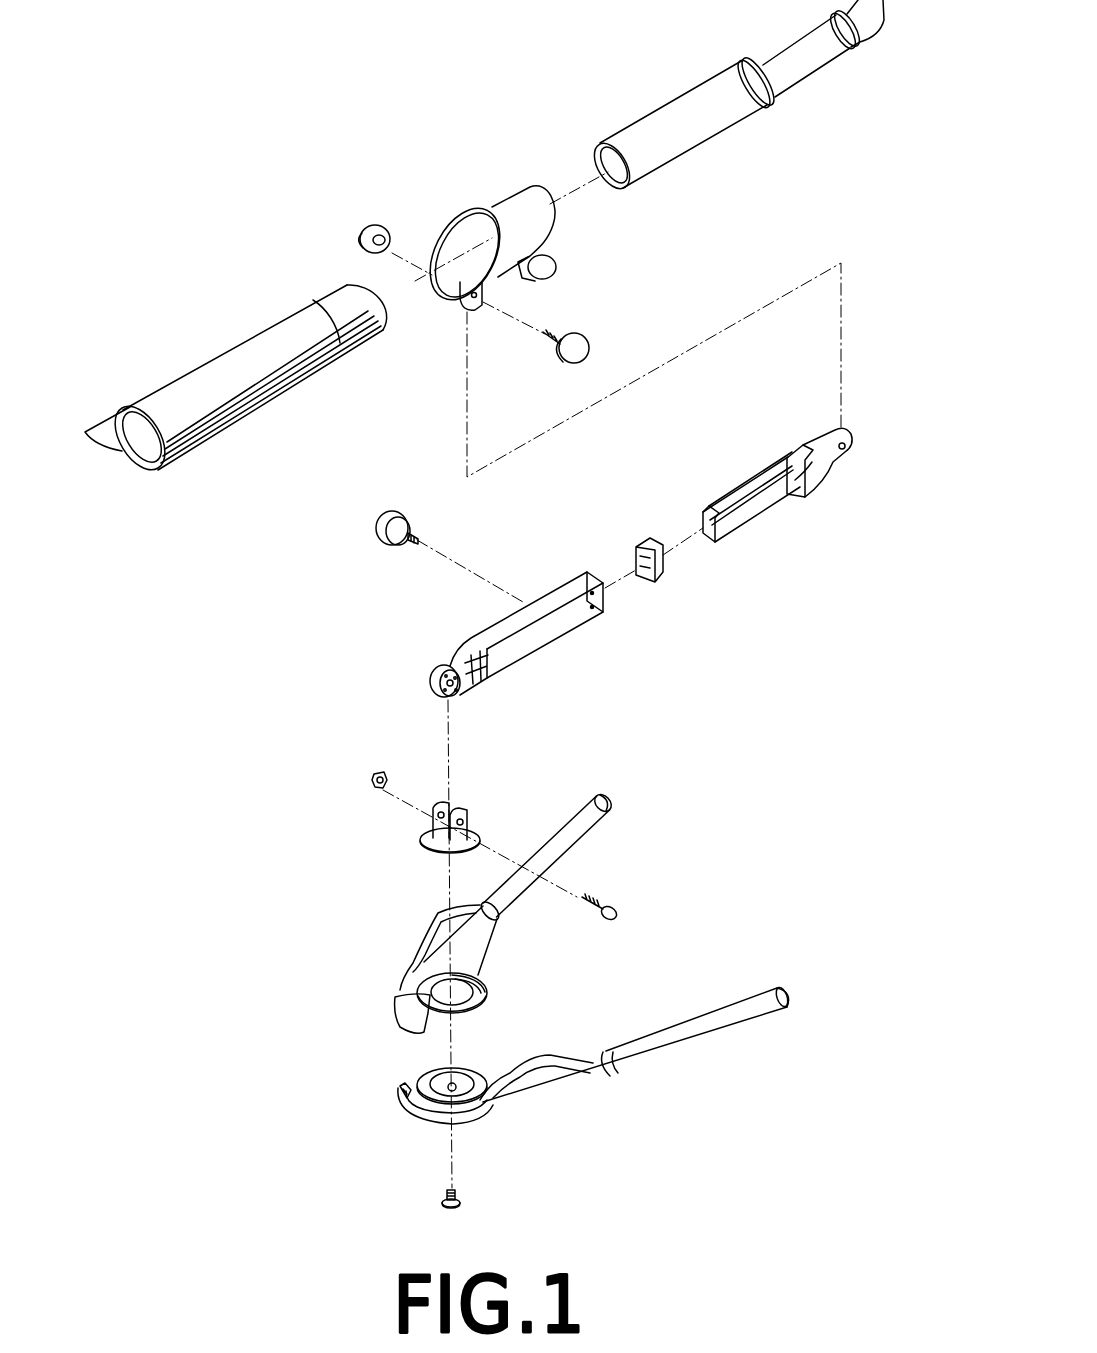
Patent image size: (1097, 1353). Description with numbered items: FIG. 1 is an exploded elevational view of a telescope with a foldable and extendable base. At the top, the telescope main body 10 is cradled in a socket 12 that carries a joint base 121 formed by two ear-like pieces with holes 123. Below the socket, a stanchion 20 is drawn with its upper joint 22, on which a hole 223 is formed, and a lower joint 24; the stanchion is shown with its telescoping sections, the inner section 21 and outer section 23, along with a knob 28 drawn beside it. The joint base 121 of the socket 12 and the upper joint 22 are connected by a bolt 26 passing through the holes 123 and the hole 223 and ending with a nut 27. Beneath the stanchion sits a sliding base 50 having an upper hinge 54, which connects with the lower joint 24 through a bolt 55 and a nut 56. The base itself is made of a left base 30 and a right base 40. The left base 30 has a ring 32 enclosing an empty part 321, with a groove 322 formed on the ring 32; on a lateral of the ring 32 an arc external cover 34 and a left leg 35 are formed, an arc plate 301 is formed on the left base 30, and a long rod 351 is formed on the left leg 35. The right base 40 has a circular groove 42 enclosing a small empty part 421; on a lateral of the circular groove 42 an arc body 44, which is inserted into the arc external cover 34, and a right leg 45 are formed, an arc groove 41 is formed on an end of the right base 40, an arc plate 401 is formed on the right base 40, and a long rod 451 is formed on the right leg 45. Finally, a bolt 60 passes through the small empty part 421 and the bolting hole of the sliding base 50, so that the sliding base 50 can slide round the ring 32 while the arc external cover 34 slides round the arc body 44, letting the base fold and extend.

The telescope main body 10 is at (233, 343).
The socket 12 is at (478, 262).
The joint base 121 is at (478, 328).
The holes 123 is at (478, 295).
The bolt 26 is at (563, 332).
The nut 27 is at (360, 235).
The stanchion 20 is at (650, 549).
The inner bar 21 is at (812, 472).
The upper joint 22 is at (854, 449).
The hole 223 is at (850, 445).
The outer bar 23 is at (512, 634).
The lower joint 24 is at (433, 667).
The knob 28 is at (413, 527).
The left base 30 is at (518, 913).
The arc plate 301 is at (430, 937).
The ring 32 is at (499, 990).
The empty part 321 is at (470, 992).
The groove 322 is at (473, 977).
The arc external cover 34 is at (400, 1013).
The left leg 35 is at (595, 869).
The long rod 351 is at (605, 810).
The sliding base 50 is at (430, 826).
The upper hinge 54 is at (432, 815).
The bolt 55 is at (614, 906).
The nut 56 is at (372, 777).
The right base 40 is at (577, 1067).
The arc plate 401 is at (543, 1062).
The arc groove 41 is at (402, 1088).
The circular groove 42 is at (439, 1069).
The small empty part 421 is at (406, 1063).
The arc body 44 is at (412, 1111).
The right leg 45 is at (656, 1052).
The long rod 451 is at (723, 1023).
The bolt 60 is at (458, 1188).